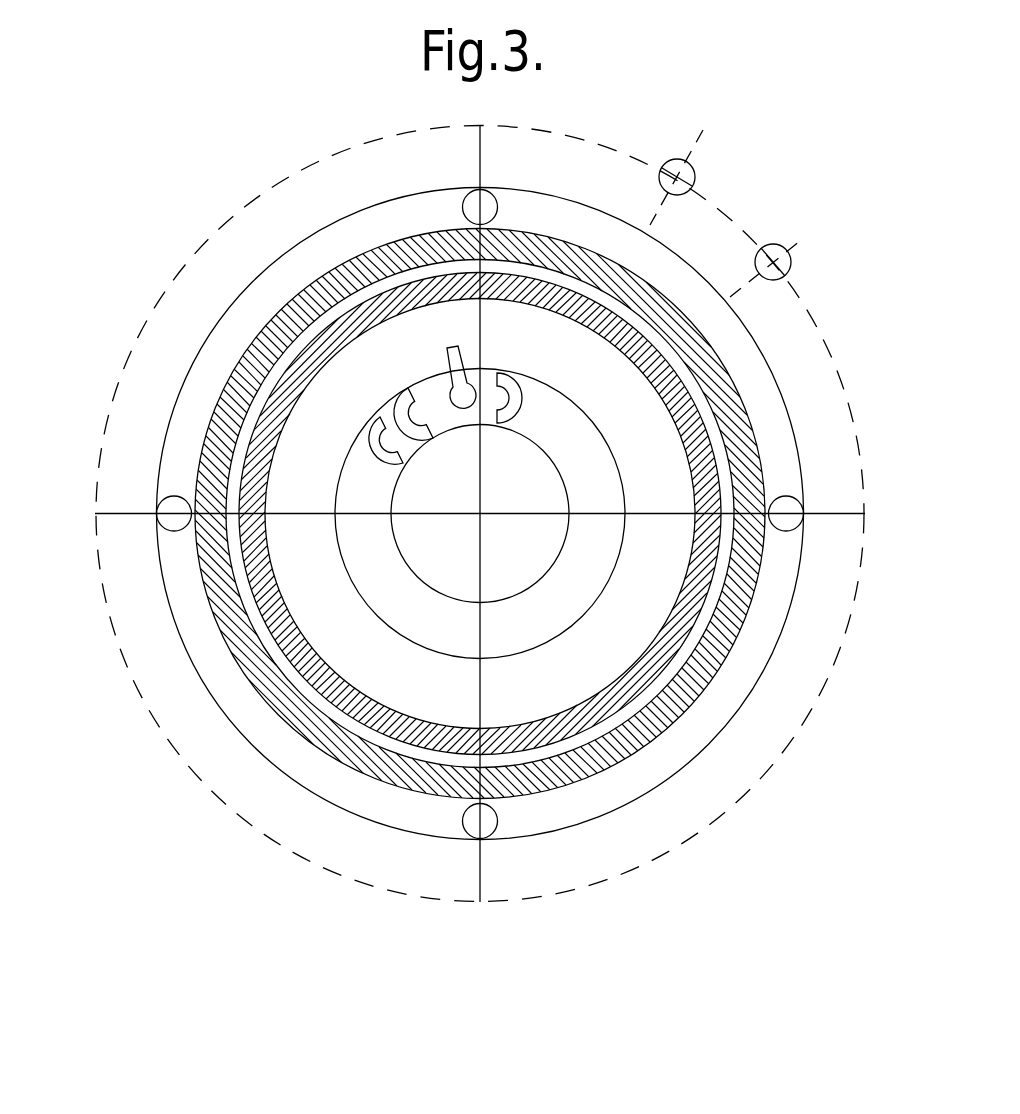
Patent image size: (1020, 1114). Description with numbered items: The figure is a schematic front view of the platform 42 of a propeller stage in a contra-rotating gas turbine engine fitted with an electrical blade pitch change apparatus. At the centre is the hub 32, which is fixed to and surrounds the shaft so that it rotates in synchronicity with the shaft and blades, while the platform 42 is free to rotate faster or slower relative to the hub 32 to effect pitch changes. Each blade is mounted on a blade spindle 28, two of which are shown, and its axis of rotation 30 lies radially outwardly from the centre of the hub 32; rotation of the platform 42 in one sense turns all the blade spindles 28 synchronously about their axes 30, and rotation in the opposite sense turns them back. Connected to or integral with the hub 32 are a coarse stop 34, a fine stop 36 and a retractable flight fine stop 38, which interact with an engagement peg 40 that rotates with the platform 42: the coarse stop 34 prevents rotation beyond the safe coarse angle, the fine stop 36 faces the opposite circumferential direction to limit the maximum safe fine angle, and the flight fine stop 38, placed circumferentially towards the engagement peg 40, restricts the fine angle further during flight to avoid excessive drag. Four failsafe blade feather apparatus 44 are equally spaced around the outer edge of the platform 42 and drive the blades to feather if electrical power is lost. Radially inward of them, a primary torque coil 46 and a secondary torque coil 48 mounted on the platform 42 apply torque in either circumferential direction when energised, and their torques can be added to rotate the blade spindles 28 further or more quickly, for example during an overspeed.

The blade spindle 28 is at (777, 243).
The axis of rotation 30 is at (802, 238).
The hub 32 is at (523, 553).
The coarse stop 34 is at (523, 390).
The fine stop 36 is at (372, 441).
The retractable flight fine stop 38 is at (408, 392).
The engagement peg 40 is at (462, 352).
The platform 42 is at (672, 579).
The failsafe blade feather apparatus 44 is at (473, 198).
The primary torque coil 46 is at (327, 267).
The secondary torque coil 48 is at (277, 388).